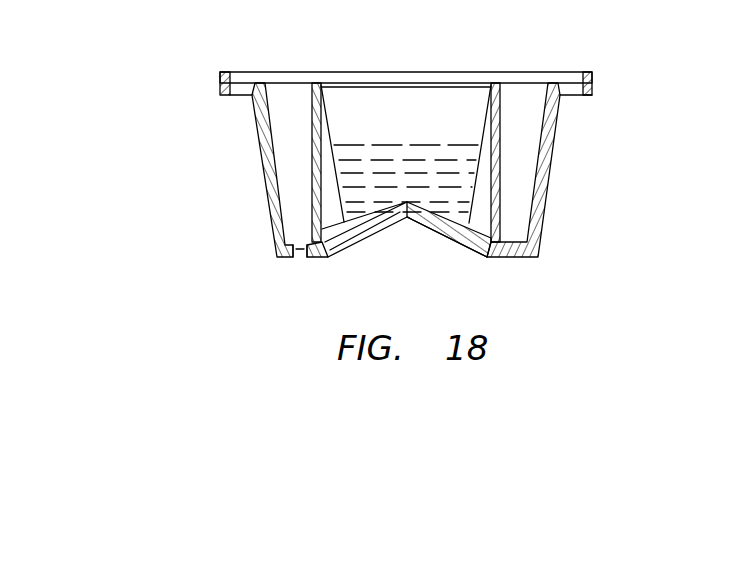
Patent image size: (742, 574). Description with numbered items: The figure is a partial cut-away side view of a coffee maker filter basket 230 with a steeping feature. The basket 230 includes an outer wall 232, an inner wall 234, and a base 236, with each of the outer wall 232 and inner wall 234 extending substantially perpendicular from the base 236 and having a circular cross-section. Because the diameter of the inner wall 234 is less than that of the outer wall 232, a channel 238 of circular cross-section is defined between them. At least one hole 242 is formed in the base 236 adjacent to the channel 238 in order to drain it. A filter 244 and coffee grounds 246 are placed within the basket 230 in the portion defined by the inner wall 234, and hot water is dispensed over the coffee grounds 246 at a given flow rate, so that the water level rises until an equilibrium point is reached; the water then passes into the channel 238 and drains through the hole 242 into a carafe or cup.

The basket 230 is at (572, 238).
The outer wall 232 is at (258, 143).
The inner wall 234 is at (310, 107).
The base 236 is at (470, 246).
The channel 238 is at (518, 96).
The hole 242 is at (298, 258).
The filter 244 is at (492, 105).
The coffee grounds 246 is at (365, 200).